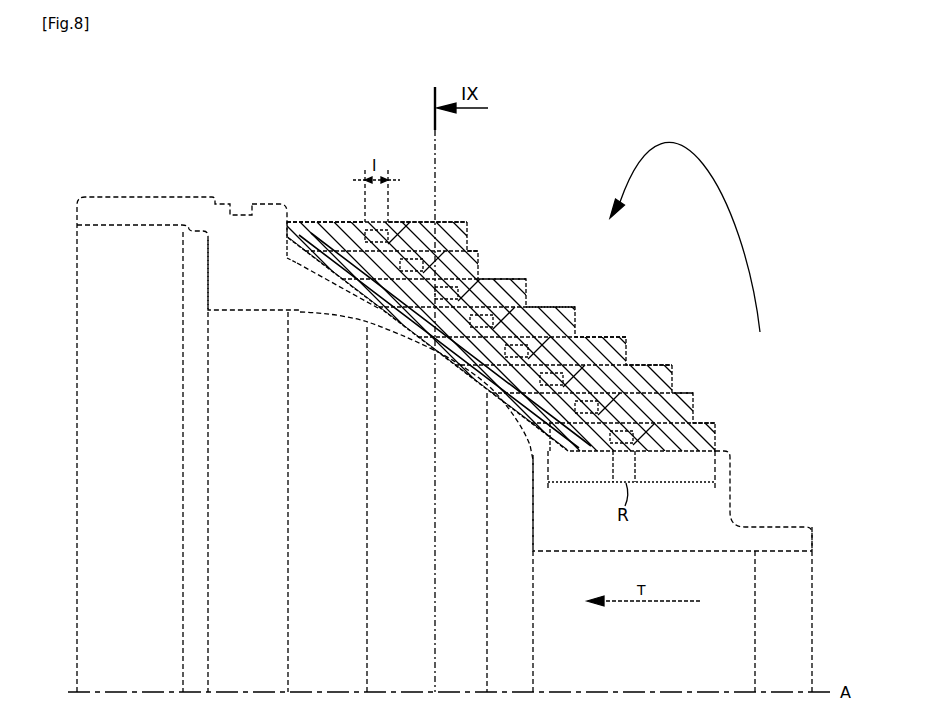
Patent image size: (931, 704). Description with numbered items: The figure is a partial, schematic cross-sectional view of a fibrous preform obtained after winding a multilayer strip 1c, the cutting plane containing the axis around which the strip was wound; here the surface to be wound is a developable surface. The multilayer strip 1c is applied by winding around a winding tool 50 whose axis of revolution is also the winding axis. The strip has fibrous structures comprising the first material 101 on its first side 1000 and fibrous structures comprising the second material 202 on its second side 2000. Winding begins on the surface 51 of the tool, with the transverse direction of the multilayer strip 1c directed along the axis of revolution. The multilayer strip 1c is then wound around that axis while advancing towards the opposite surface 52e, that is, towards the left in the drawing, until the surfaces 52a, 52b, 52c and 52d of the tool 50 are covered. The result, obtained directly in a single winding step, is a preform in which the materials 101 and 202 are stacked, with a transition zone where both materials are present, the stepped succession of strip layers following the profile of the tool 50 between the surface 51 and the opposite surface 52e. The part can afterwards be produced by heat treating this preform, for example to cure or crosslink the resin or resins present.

The winding tool 50 is at (140, 198).
The surface 51 is at (733, 453).
The surface 52a is at (540, 412).
The surface 52b is at (427, 334).
The surface 52c is at (301, 266).
The surface 52d is at (298, 264).
The opposite surface 52e is at (266, 203).
The multilayer strip 1c is at (475, 230).
The first material 101 is at (326, 222).
The second material 202 is at (456, 222).
The first side 1000 is at (578, 483).
The second side 2000 is at (676, 483).